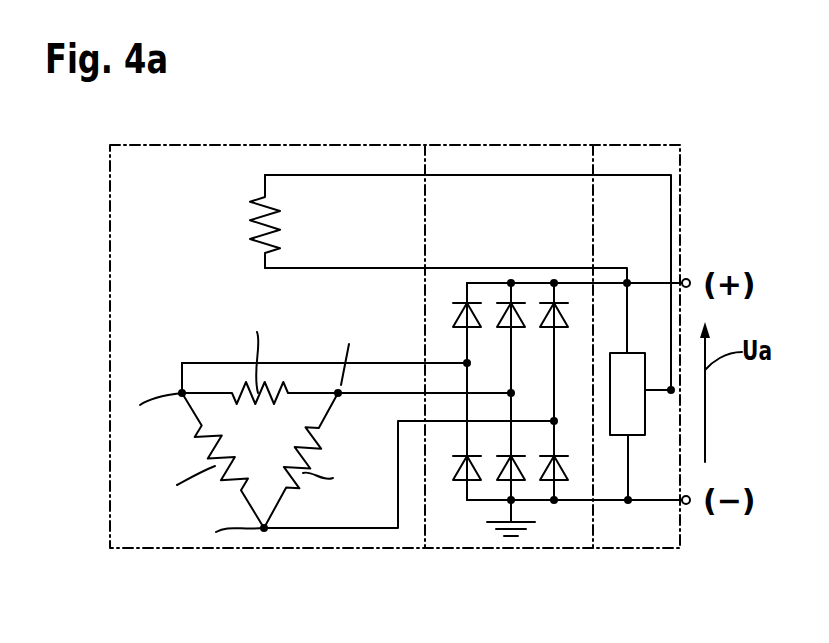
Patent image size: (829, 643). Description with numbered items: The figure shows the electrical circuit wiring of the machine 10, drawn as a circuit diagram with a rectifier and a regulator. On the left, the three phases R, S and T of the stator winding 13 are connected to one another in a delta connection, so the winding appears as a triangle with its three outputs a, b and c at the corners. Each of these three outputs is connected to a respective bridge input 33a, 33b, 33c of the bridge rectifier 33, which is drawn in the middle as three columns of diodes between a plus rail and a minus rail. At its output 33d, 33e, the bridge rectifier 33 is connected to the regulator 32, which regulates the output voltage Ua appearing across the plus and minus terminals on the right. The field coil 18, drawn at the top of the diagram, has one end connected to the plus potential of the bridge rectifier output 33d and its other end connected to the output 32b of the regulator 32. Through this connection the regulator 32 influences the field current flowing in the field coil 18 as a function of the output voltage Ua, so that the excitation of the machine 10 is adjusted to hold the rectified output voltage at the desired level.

The machine 10 is at (132, 297).
The stator winding 13 is at (214, 382).
The field coil 18 is at (250, 213).
The regulator 32 is at (628, 423).
The output of regulator 32b is at (671, 390).
The bridge rectifier 33 is at (596, 405).
The bridge input 33a is at (467, 363).
The bridge input 33b is at (511, 360).
The bridge input 33c is at (554, 362).
The bridge rectifier output 33d is at (654, 282).
The bridge rectifier output 33e is at (660, 500).